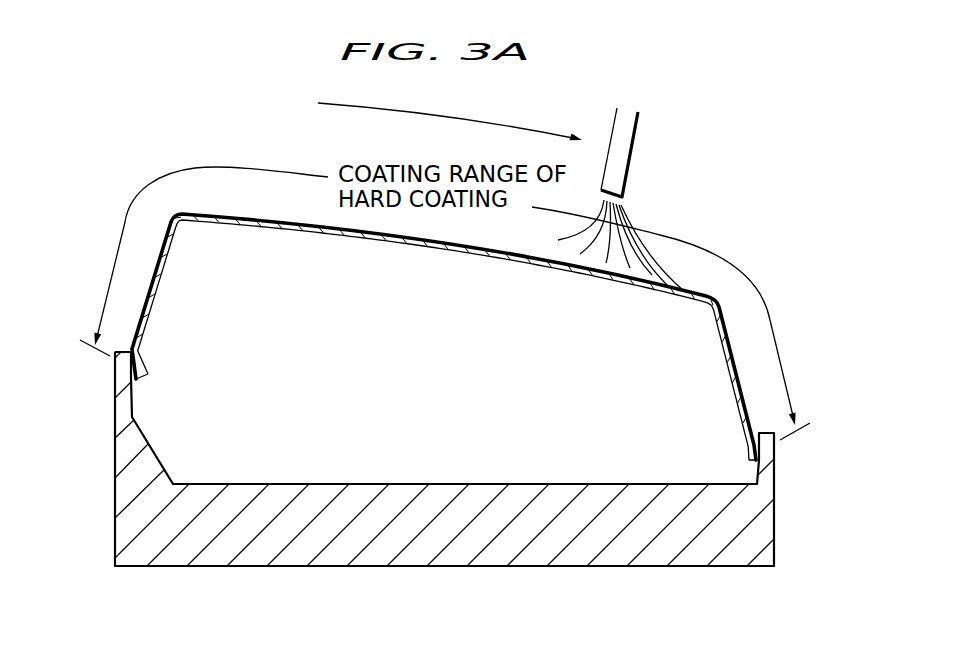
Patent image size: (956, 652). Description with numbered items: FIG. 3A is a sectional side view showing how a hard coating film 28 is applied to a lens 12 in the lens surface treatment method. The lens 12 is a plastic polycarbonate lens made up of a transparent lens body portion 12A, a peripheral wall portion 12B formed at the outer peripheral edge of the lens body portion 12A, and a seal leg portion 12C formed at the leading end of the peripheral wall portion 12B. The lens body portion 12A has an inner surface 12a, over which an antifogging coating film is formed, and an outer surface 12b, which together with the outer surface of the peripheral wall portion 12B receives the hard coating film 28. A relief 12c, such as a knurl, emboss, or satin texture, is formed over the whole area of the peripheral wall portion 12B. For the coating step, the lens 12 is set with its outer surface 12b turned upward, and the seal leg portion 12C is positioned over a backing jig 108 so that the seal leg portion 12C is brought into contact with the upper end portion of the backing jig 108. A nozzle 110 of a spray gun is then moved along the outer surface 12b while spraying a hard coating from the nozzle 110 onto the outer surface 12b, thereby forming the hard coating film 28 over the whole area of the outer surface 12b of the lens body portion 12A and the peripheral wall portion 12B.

The lens 12 is at (444, 282).
The hard coating film 28 is at (324, 213).
The lens body portion 12A is at (402, 241).
The inner surface 12a is at (490, 259).
The peripheral wall portion 12B is at (158, 271).
The outer surface 12b is at (688, 287).
The relief 12c is at (167, 297).
The seal leg portion 12C is at (143, 367).
The nozzle 110 is at (637, 140).
The backing jig 108 is at (648, 568).